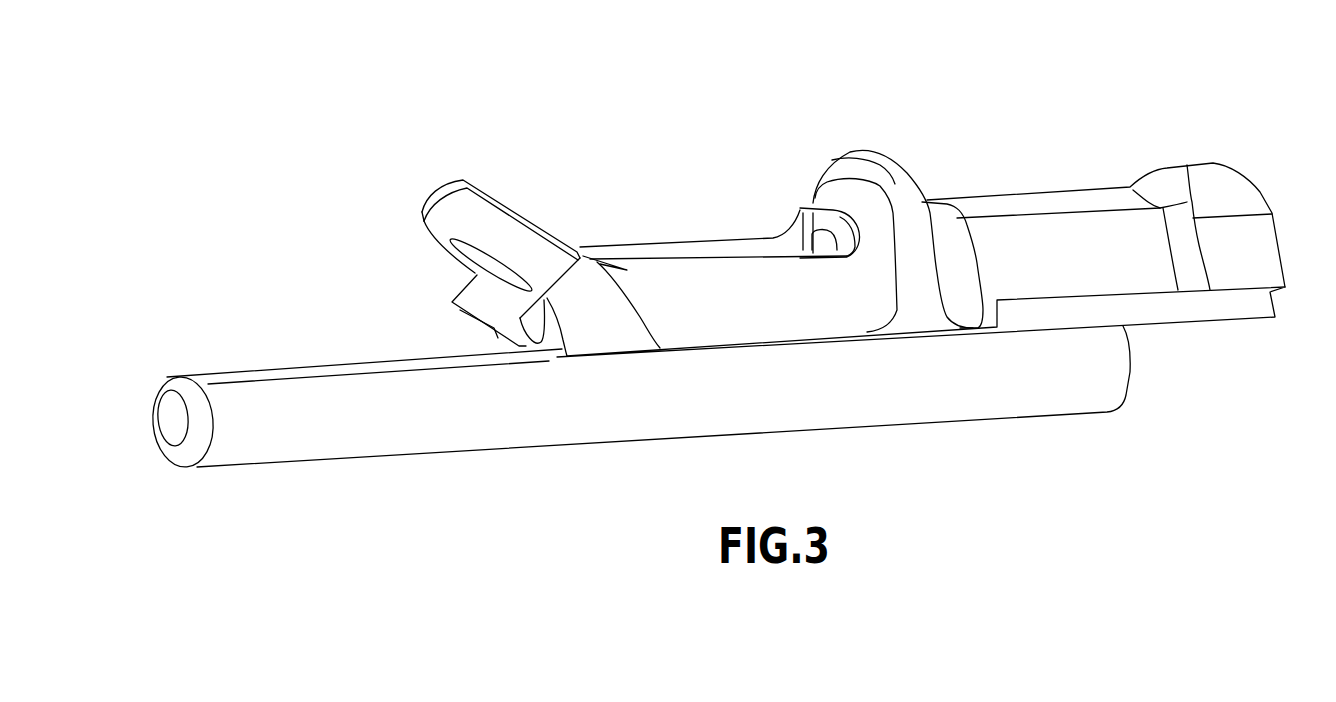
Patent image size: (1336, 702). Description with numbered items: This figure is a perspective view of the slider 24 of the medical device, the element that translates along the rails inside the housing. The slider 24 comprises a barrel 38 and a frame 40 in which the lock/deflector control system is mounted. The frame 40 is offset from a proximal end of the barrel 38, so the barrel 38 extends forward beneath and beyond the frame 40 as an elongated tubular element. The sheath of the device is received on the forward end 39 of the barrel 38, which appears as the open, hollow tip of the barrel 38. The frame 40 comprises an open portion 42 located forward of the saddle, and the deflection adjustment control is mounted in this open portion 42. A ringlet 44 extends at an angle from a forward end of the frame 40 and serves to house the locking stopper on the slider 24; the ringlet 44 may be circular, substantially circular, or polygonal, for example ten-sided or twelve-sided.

The slider 24 is at (727, 178).
The barrel 38 is at (322, 370).
The forward end of the barrel 39 is at (170, 447).
The frame 40 is at (1027, 165).
The open portion 42 is at (675, 250).
The ringlet 44 is at (445, 198).